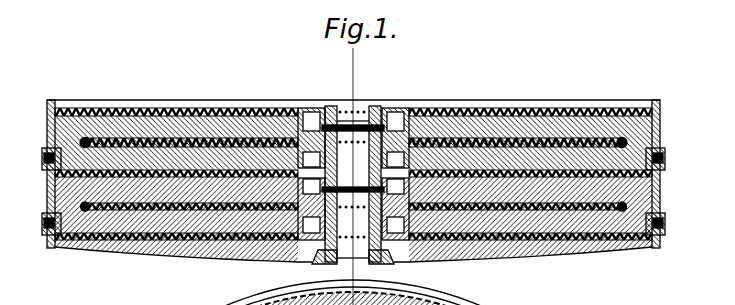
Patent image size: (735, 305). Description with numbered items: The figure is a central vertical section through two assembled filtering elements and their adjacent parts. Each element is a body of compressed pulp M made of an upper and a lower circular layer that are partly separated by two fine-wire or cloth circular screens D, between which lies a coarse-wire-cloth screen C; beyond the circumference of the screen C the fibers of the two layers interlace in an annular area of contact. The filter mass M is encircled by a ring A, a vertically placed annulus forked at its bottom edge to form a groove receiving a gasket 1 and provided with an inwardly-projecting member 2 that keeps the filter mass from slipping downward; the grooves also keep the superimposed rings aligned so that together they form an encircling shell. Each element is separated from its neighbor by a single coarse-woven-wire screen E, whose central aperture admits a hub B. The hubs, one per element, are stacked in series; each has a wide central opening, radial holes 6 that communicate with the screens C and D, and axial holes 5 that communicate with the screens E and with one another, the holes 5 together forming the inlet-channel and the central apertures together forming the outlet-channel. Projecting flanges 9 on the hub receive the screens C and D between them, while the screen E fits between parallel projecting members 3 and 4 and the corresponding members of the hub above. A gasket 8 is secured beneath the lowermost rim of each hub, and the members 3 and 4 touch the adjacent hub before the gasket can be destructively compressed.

The gasket 1 is at (43, 160).
The inwardly-projecting member 2 is at (41, 151).
The projecting member 3 is at (293, 110).
The projecting member 4 is at (322, 112).
The holes parallel with the hub axis 5 is at (426, 110).
The radial holes 6 is at (345, 221).
The gasket 8 is at (345, 165).
The projecting flanges 9 is at (270, 110).
The ring A is at (349, 186).
The hub B is at (359, 150).
The coarse-wire-cloth screen C is at (180, 138).
The fine-wire or cloth circular screens D is at (160, 211).
The coarse-woven-wire screen E is at (182, 110).
The body of compressed pulp M is at (68, 110).